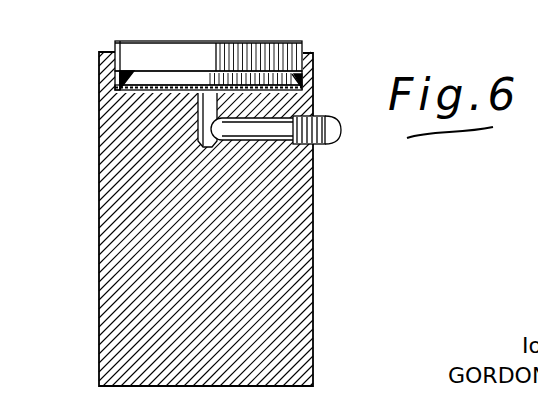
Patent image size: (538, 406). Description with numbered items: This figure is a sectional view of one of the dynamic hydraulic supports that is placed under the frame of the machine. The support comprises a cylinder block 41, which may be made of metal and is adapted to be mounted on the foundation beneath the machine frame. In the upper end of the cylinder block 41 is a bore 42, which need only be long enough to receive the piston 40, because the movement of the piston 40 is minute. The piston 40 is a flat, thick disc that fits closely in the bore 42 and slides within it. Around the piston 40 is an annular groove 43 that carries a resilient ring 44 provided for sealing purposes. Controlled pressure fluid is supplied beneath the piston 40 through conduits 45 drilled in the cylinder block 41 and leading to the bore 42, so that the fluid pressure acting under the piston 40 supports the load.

The piston 40 is at (115, 43).
The cylinder block 41 is at (100, 240).
The bore 42 is at (315, 63).
The annular groove 43 is at (122, 73).
The resilient ring 44 is at (115, 78).
The conduits 45 is at (272, 132).